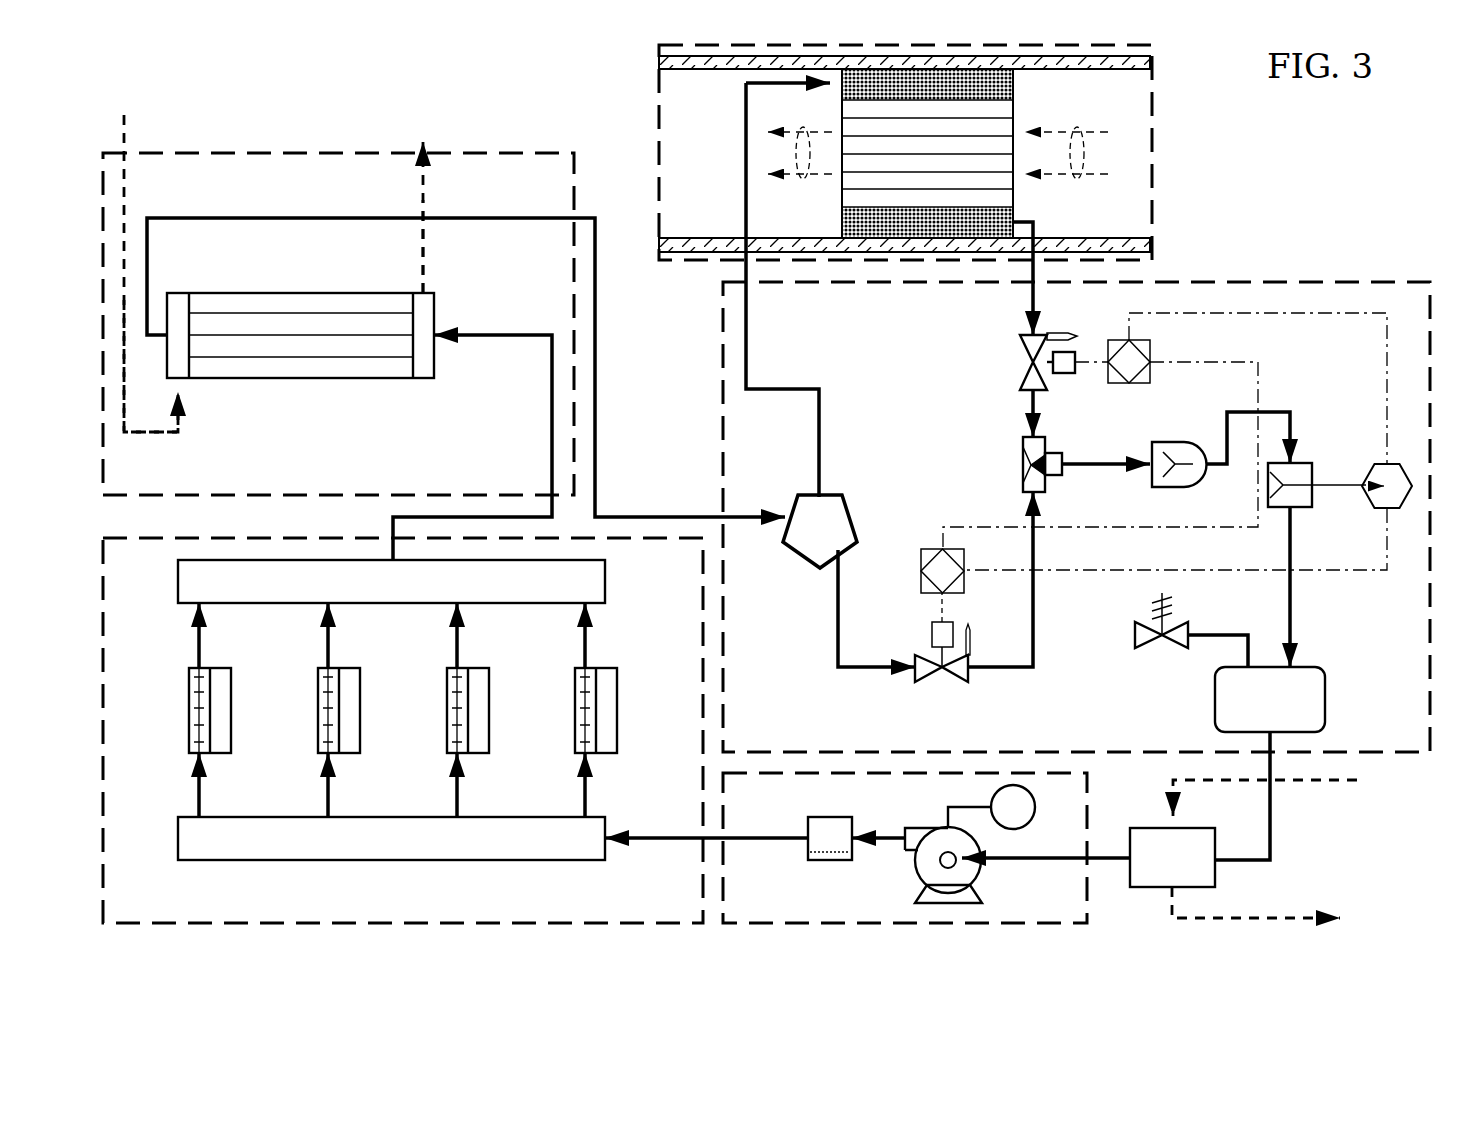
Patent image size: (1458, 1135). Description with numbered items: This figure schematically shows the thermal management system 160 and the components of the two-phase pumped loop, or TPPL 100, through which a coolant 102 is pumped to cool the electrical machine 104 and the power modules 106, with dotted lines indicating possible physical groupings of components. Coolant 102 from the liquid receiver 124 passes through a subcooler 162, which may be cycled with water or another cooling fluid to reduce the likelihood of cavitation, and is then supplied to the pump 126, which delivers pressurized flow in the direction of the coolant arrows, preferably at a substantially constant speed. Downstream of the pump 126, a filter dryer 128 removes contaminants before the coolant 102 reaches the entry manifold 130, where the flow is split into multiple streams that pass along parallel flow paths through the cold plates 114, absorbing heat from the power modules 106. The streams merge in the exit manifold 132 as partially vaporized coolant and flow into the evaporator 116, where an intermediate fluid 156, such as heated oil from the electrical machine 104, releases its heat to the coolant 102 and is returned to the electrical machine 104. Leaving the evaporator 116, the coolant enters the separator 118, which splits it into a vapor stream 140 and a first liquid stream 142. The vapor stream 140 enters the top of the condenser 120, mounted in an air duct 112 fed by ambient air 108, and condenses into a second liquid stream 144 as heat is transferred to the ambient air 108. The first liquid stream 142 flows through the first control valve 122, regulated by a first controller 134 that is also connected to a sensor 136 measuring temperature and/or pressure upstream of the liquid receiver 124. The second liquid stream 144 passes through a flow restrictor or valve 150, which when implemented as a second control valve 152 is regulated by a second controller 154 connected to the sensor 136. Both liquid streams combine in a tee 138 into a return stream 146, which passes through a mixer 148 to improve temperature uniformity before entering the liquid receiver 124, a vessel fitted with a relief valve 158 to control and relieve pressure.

The TPPL 100 is at (766, 484).
The thermal management system 160 is at (1335, 172).
The coolant 102 is at (343, 218).
The electrical machine 104 is at (775, 496).
The power modules 106 is at (231, 722).
The ambient air 108 is at (805, 178).
The air duct 112 is at (713, 70).
The cold plates 114 is at (189, 718).
The evaporator 116 is at (296, 293).
The separator 118 is at (803, 553).
The condenser 120 is at (1015, 107).
The first control valve 122 is at (942, 682).
The liquid receiver 124 is at (1270, 699).
The pump 126 is at (985, 880).
The filter dryer 128 is at (856, 838).
The entry manifold 130 is at (390, 860).
The exit manifold 132 is at (605, 582).
The first controller 134 is at (921, 580).
The sensor 136 is at (1300, 507).
The tee 138 is at (1023, 465).
The vapor stream 140 is at (819, 440).
The first liquid stream 142 is at (868, 670).
The second liquid stream 144 is at (1033, 297).
The return stream 146 is at (1090, 463).
The mixer 148 is at (1175, 442).
The flow restrictor or valve 150 is at (992, 361).
The second control valve 152 is at (1061, 362).
The second controller 154 is at (1150, 352).
The intermediate fluid 156 is at (426, 192).
The relief valve 158 is at (1162, 650).
The subcooler 162 is at (1172, 857).